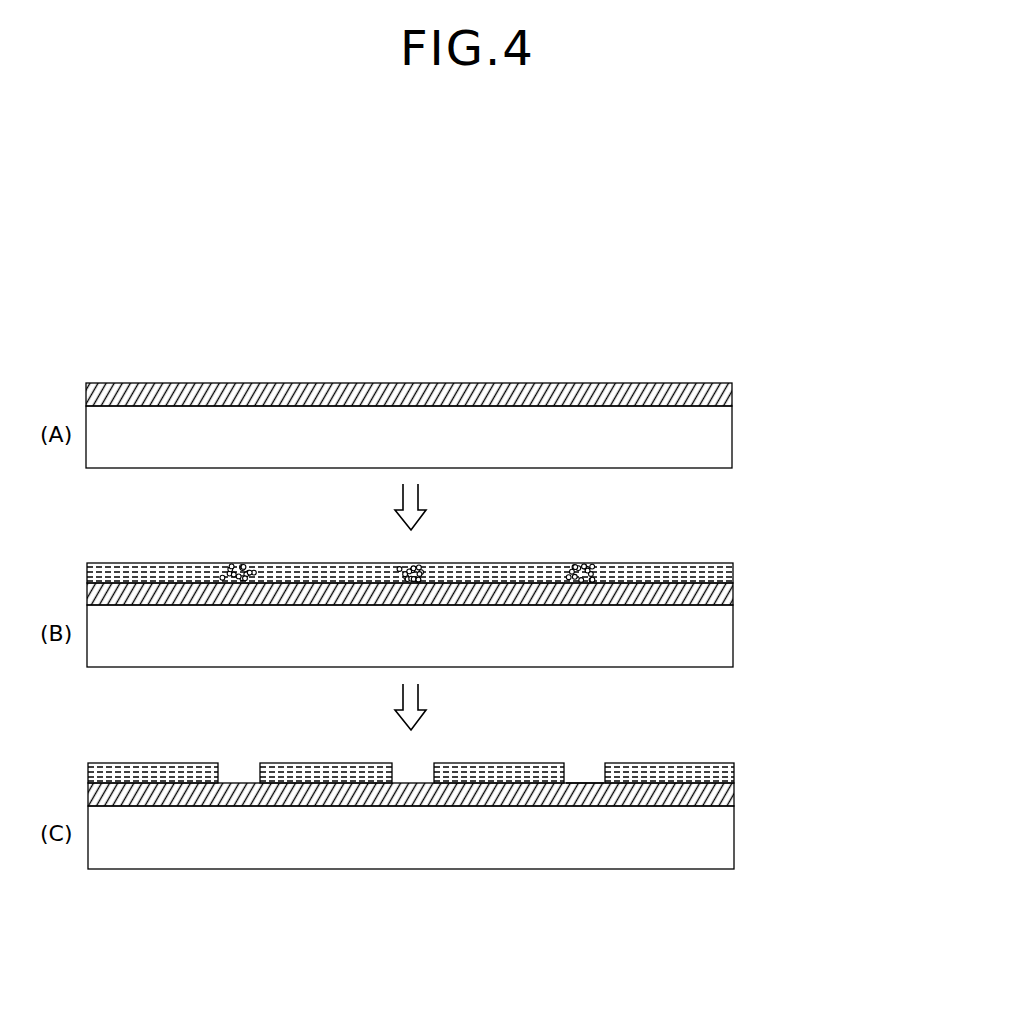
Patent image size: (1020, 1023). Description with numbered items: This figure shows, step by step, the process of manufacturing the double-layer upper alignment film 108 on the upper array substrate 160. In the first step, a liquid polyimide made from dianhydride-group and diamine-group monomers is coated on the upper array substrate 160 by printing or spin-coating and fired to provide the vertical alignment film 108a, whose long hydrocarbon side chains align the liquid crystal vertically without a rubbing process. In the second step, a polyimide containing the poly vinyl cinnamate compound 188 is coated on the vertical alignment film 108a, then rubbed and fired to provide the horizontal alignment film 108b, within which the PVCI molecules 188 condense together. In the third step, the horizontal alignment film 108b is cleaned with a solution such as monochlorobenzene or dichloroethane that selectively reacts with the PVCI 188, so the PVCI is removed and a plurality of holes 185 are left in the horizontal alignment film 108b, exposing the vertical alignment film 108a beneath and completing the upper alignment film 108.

The upper array substrate 160 is at (718, 437).
The vertical alignment film 108a is at (720, 397).
The horizontal alignment film 108b is at (720, 574).
The upper alignment film 108 is at (492, 784).
The poly vinyl cinnamate compound molecules 188 is at (586, 564).
The holes 185 is at (586, 764).